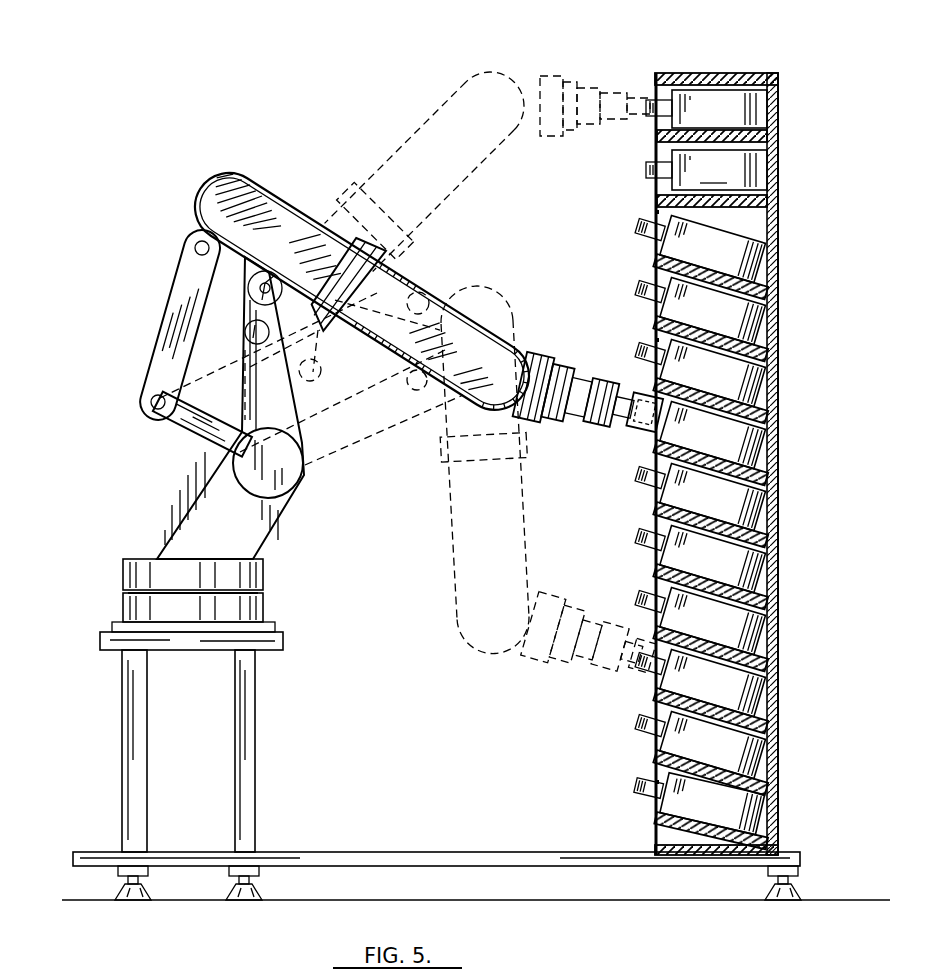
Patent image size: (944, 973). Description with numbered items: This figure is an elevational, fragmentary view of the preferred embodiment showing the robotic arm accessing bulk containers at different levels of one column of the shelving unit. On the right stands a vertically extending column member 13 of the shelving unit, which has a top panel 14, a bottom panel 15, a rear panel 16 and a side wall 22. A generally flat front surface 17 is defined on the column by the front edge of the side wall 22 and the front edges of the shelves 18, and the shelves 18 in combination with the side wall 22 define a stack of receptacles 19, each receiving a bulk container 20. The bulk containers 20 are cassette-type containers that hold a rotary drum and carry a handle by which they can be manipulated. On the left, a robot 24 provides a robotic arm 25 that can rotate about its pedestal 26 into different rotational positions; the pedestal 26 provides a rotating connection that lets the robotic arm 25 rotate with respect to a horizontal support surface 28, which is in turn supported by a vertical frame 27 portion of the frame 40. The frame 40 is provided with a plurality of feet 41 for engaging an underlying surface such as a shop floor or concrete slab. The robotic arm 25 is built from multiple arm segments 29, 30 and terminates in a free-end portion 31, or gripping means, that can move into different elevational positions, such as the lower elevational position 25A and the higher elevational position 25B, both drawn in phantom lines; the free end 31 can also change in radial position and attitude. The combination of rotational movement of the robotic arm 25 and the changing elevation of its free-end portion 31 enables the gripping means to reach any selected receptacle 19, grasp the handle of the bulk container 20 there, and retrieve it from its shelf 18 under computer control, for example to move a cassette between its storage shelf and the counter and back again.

The column member 13 is at (782, 78).
The top panel 14 is at (722, 72).
The bottom panel 15 is at (717, 852).
The rear panel 16 is at (778, 642).
The front surface 17 is at (654, 212).
The shelves 18 is at (778, 290).
The receptacles 19 is at (660, 524).
The bulk containers 20 is at (740, 505).
The side wall 22 is at (745, 216).
The robot 24 is at (237, 162).
The robotic arm 25 is at (292, 212).
The lower elevational position 25A is at (490, 648).
The higher elevational position 25B is at (487, 176).
The pedestal 26 is at (128, 572).
The vertical frame 27 is at (135, 750).
The horizontal support surface 28 is at (100, 640).
The arm segment 29 is at (422, 116).
The arm segment 30 is at (545, 76).
The free-end portion 31 is at (640, 432).
The frame 40 is at (498, 852).
The feet 41 is at (134, 896).